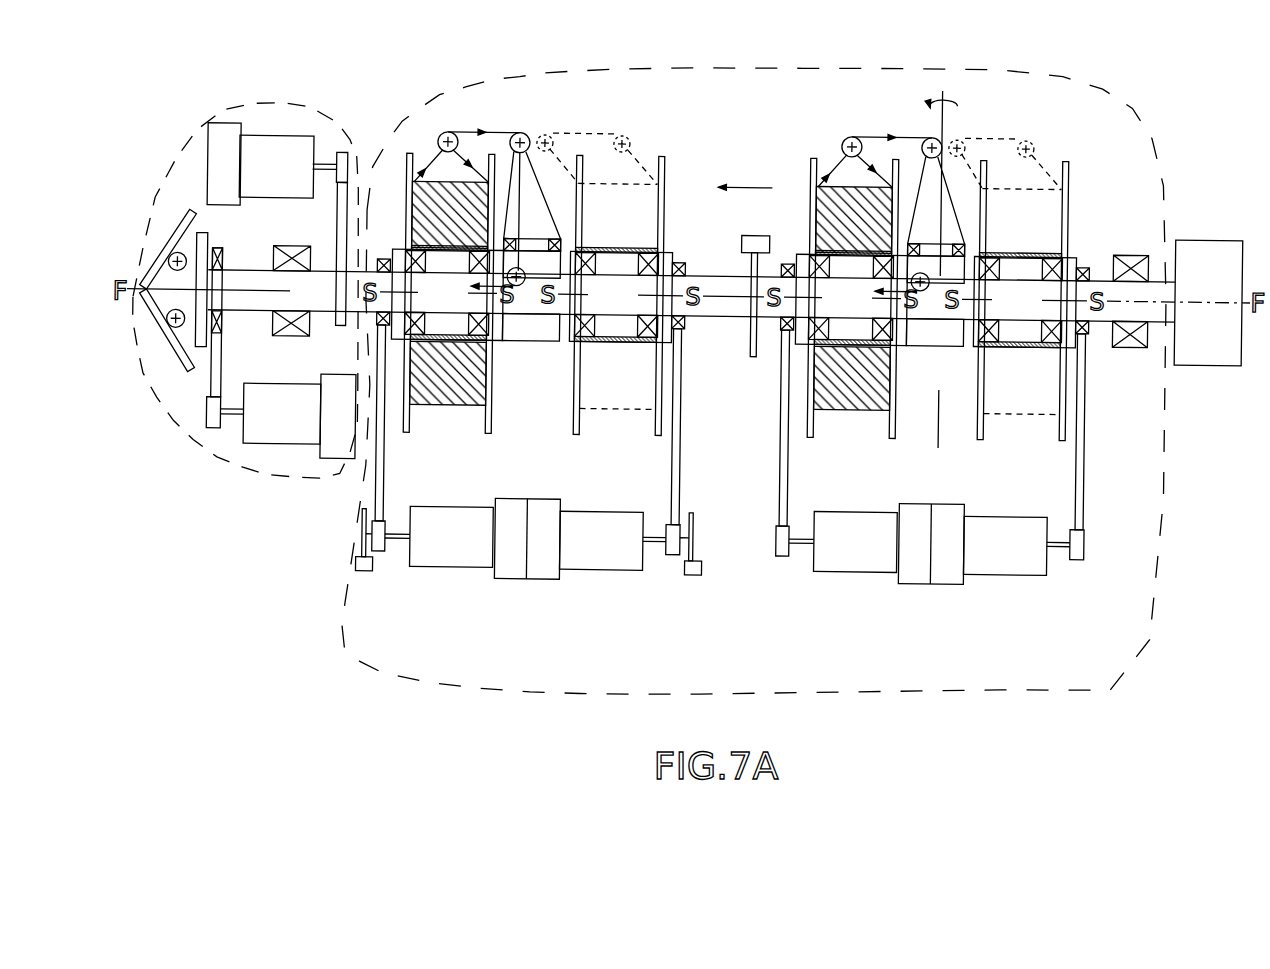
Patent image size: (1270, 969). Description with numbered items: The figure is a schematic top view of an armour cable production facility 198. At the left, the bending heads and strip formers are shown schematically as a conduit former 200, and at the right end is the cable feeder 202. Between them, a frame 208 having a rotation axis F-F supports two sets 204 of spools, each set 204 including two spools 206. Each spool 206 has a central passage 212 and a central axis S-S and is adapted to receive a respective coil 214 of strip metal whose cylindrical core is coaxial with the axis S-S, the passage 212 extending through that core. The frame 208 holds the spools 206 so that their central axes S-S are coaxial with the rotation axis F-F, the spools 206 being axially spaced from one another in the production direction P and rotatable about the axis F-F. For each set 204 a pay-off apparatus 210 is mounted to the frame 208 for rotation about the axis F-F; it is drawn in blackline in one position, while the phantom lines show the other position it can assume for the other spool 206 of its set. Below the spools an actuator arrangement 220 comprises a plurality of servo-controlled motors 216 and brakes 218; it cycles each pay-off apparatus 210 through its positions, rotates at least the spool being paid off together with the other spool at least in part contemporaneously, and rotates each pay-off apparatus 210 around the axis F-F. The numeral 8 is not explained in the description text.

The armour cable production facility 198 is at (1106, 85).
The conduit former 200 is at (270, 484).
The cable feeder 202 is at (1194, 360).
The set of spools 204 is at (611, 462).
The spool 206 is at (492, 413).
The frame 208 is at (731, 127).
The pay-off apparatus 210 is at (529, 129).
The central passage 212 is at (420, 313).
The coil 214 is at (428, 409).
The servo-controlled motor 216 is at (515, 571).
The brake 218 is at (370, 577).
The actuator arrangement 220 is at (386, 640).
The apparatus 8 is at (1078, 688).